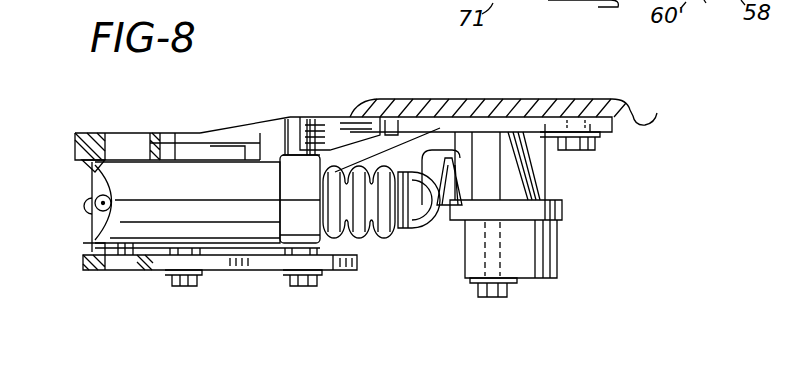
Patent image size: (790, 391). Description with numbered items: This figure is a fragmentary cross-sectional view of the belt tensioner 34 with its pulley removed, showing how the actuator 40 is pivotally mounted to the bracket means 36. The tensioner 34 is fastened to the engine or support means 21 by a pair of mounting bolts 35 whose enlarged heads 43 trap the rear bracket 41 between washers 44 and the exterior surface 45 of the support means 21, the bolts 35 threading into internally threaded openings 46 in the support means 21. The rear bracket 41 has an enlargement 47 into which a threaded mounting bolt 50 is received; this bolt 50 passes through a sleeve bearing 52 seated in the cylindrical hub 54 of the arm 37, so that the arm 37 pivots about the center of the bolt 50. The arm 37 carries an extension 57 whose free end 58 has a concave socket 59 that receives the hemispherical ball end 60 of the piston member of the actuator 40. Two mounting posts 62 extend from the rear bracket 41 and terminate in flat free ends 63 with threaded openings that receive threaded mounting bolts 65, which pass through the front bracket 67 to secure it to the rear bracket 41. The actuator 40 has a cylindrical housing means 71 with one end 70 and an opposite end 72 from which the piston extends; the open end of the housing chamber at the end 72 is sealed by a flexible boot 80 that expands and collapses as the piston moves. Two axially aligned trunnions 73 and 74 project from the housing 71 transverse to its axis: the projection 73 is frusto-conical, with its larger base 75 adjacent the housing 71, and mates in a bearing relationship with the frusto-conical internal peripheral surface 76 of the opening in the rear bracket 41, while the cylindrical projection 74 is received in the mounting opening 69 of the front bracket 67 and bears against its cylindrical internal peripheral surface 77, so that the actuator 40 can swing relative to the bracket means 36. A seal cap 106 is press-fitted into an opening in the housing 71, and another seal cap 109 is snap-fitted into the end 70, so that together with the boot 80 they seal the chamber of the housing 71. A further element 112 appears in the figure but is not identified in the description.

The engine or support means 21 is at (488, 118).
The belt tensioner 34 is at (437, 289).
The mounting bolts 35 is at (364, 112).
The bracket means 36 is at (276, 122).
The arm 37 is at (562, 208).
The actuator 40 is at (237, 133).
The rear bracket 41 is at (209, 131).
The enlarged heads 43 is at (590, 148).
The washers 44 is at (604, 138).
The exterior surface 45 is at (641, 116).
The internally threaded openings 46 is at (569, 98).
The enlargement 47 is at (514, 128).
The mounting bolt 50 is at (497, 298).
The sleeve bearing 52 is at (518, 262).
The cylindrical hub 54 is at (562, 243).
The extension 57 is at (462, 132).
The free end 58 is at (442, 222).
The concave socket 59 is at (418, 226).
The ball end 60 is at (432, 130).
The mounting posts 62 is at (181, 133).
The flat free ends 63 is at (300, 257).
The threaded mounting bolts 65 is at (188, 287).
The front bracket 67 is at (325, 263).
The mounting opening 69 is at (128, 262).
The end of housing means 70 is at (112, 235).
The cylindrical housing means 71 is at (205, 195).
The end of housing 72 is at (270, 190).
The frusto-conical projection 73 is at (122, 132).
The cylindrical projection 74 is at (112, 266).
The larger base 75 is at (105, 159).
The frusto-conical internal peripheral surface 76 is at (114, 131).
The cylindrical internal peripheral surface 77 is at (100, 272).
The flexible boot 80 is at (368, 126).
The seal cap 106 is at (97, 200).
The seal cap 109 is at (92, 212).
The member 112 is at (713, 16).